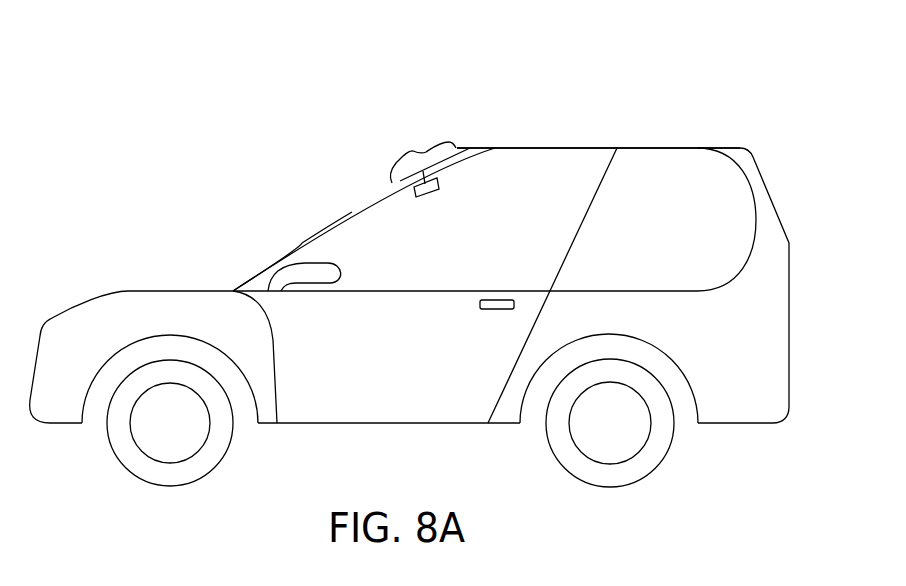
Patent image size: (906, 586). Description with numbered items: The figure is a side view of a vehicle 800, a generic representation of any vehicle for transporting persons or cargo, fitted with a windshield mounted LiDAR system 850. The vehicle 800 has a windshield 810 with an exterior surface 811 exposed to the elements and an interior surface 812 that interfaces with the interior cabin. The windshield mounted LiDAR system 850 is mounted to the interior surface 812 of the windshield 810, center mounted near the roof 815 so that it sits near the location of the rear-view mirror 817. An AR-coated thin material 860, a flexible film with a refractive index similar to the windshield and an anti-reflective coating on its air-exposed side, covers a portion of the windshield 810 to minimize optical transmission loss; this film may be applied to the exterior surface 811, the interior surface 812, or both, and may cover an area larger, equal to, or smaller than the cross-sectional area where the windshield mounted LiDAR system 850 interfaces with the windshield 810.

The vehicle 800 is at (185, 60).
The windshield 810 is at (312, 195).
The exterior surface 811 is at (302, 243).
The interior surface 812 is at (352, 212).
The roof 815 is at (566, 148).
The rear-view mirror 817 is at (440, 186).
The windshield mounted LiDAR system 850 is at (455, 148).
The AR-coated thin material 860 is at (418, 151).